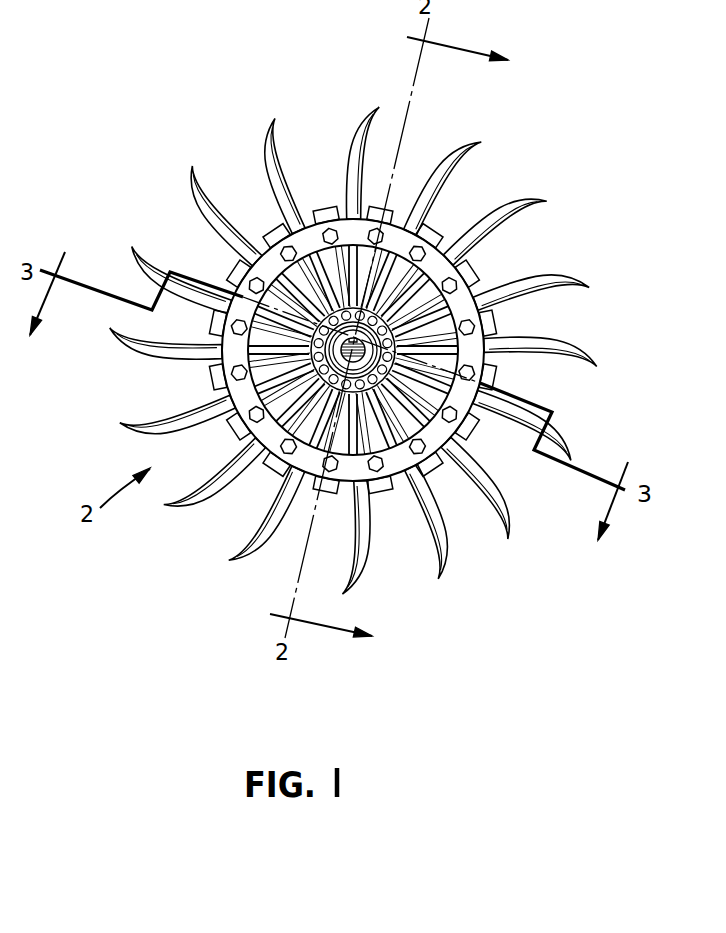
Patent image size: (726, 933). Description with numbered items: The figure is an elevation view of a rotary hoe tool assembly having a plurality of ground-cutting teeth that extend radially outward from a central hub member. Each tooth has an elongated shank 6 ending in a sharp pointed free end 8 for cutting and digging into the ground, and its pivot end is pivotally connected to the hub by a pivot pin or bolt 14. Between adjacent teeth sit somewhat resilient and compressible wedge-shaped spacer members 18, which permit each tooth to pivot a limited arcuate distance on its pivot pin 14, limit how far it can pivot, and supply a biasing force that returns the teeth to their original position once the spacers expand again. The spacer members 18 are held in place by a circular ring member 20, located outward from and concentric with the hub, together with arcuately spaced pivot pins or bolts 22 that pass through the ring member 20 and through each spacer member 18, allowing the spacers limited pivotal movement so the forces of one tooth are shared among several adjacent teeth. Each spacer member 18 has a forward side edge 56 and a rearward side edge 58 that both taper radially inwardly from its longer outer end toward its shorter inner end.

The elongated shank 6 is at (539, 336).
The sharp pointed free end 8 is at (572, 272).
The pivot pin or bolt 14 is at (513, 202).
The wedge-shaped spacer member 18 is at (331, 211).
The circular ring member 20 is at (247, 260).
The pivot pin or bolt 22 is at (290, 242).
The forward side edge 56 is at (367, 488).
The rearward side edge 58 is at (330, 483).